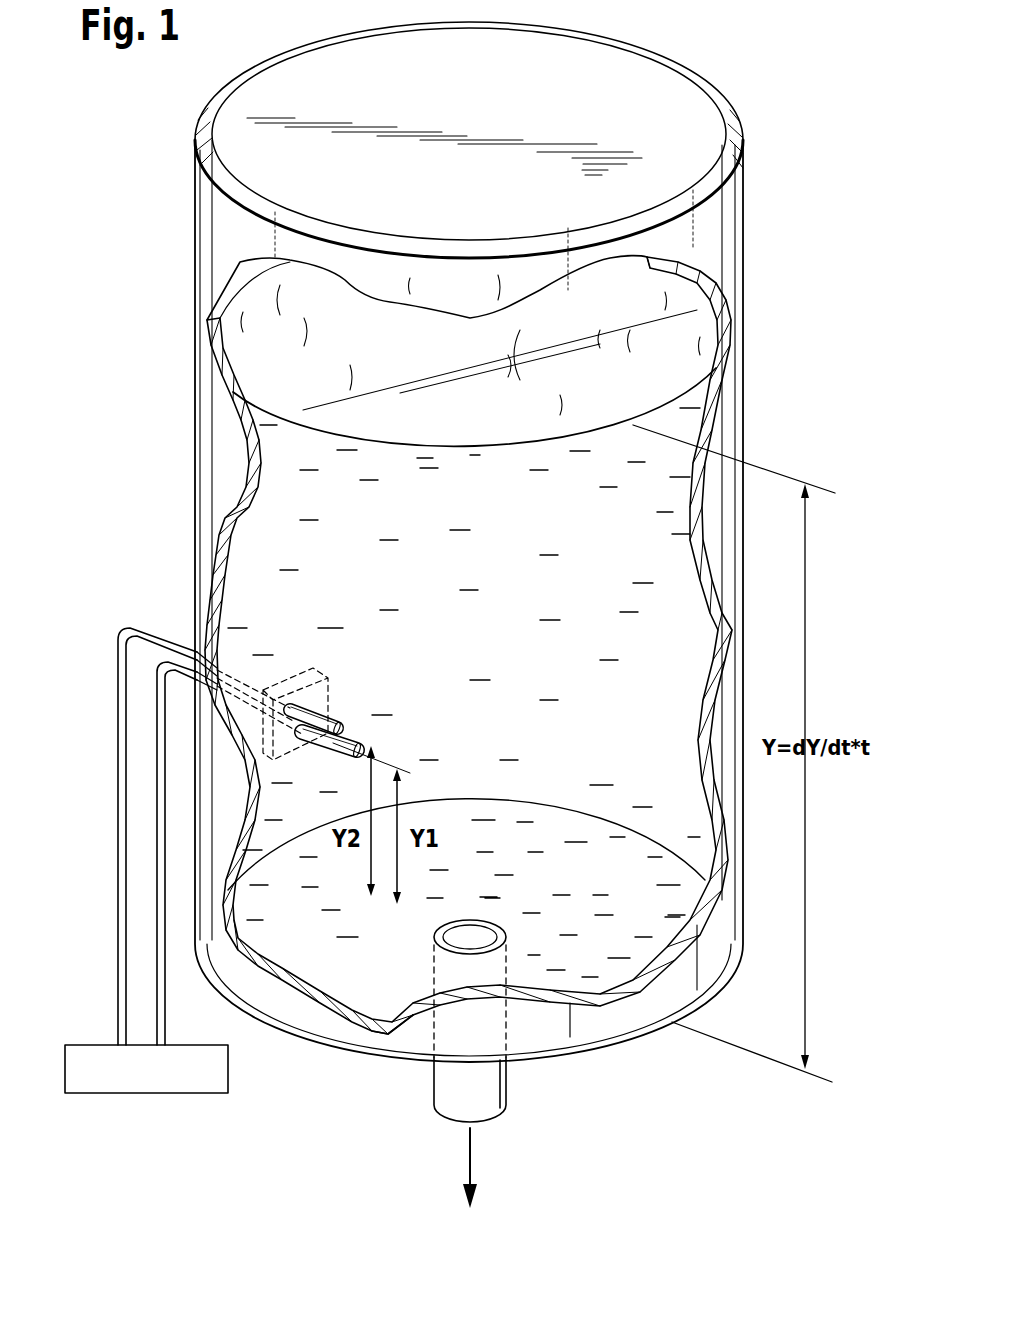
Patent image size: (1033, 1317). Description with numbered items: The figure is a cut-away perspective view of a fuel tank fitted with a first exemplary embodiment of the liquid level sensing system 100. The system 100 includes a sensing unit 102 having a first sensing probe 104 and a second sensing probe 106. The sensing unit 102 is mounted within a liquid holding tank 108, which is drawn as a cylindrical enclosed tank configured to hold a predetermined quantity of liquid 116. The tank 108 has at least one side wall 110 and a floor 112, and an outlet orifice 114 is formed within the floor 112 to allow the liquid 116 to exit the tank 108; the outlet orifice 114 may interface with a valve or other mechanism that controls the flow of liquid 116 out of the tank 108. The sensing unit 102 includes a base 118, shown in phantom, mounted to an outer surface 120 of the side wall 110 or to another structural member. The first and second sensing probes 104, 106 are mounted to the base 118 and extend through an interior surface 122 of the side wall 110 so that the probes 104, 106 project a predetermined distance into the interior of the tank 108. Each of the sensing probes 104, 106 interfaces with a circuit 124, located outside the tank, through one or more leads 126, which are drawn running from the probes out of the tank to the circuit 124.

The liquid level sensing system 100 is at (786, 98).
The sensing unit 102 is at (282, 630).
The first sensing probe 104 is at (329, 716).
The second sensing probe 106 is at (340, 742).
The liquid holding tank 108 is at (218, 240).
The side wall 110 is at (250, 482).
The floor 112 is at (393, 997).
The outlet orifice 114 is at (460, 935).
The liquid 116 is at (683, 412).
The base 118 is at (293, 675).
The outer surface 120 is at (222, 432).
The interior surface 122 is at (241, 556).
The circuit 124 is at (195, 1090).
The leads 126 is at (118, 985).